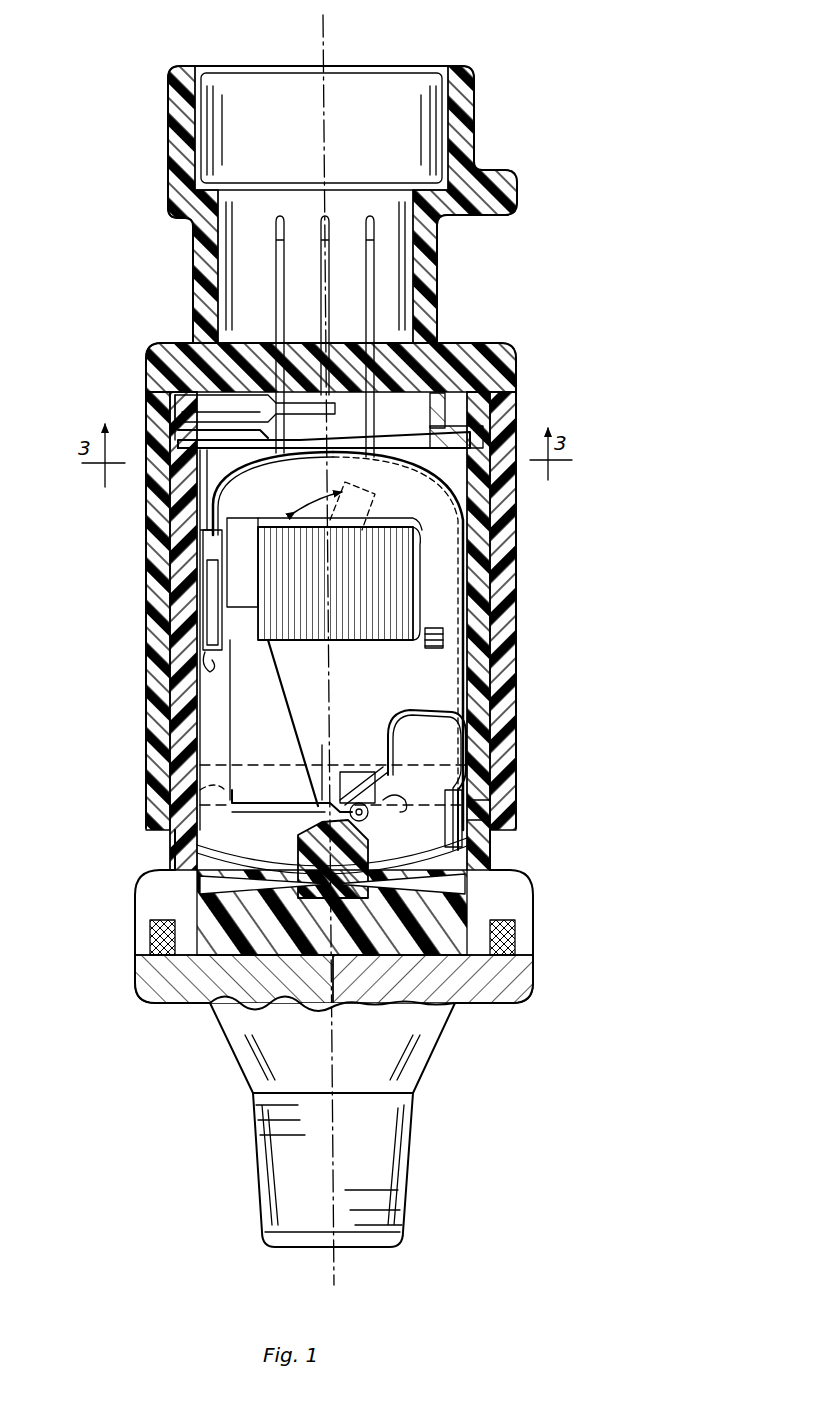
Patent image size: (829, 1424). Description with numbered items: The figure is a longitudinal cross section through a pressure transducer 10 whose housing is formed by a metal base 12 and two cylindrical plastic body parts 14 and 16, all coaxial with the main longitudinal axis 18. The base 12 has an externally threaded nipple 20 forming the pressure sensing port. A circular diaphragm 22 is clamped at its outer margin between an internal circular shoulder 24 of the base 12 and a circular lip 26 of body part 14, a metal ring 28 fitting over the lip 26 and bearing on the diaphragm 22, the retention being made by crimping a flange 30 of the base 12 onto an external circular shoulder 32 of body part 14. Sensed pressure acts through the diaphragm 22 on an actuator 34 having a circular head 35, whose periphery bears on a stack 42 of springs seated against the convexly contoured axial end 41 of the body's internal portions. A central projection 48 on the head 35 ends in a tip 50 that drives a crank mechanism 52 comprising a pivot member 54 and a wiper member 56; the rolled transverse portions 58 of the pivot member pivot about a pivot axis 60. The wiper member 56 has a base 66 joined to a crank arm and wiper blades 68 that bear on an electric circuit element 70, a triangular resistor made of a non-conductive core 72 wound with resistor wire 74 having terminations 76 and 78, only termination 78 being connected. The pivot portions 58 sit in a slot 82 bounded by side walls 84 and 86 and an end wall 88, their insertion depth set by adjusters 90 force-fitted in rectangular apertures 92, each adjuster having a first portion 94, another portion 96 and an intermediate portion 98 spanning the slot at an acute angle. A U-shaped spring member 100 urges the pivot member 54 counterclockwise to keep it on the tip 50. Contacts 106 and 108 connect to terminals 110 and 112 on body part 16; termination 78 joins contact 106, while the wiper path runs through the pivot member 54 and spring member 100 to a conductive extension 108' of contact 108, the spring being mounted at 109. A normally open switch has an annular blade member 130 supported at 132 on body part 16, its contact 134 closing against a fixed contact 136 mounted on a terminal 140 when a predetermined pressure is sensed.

The pressure transducer 10 is at (514, 343).
The metal base 12 is at (430, 1060).
The cylindrical plastic body part 14 is at (485, 733).
The cylindrical plastic body part 16 is at (508, 675).
The main longitudinal axis 18 is at (330, 50).
The externally threaded nipple 20 is at (410, 1175).
The diaphragm 22 is at (240, 1020).
The internal circular shoulder 24 is at (528, 925).
The circular lip 26 is at (150, 915).
The circular metal ring 28 is at (195, 942).
The flange 30 is at (522, 893).
The external circular shoulder 32 is at (165, 880).
The actuator 34 is at (215, 955).
The head 35 is at (300, 935).
The axial end 41 is at (240, 864).
The stack of springs 42 is at (480, 882).
The central projection 48 is at (150, 898).
The tip 50 is at (306, 830).
The crank mechanism 52 is at (322, 795).
The pivot member 54 is at (283, 800).
The wiper member 56 is at (262, 683).
The transverse portions 58 is at (390, 918).
The pivot axis 60 is at (480, 858).
The base 66 is at (248, 815).
The wiper blades 68 is at (328, 492).
The electric circuit element 70 is at (372, 530).
The non-conductive core 72 is at (450, 603).
The resistor wire 74 is at (418, 578).
The termination 76 is at (444, 638).
The termination 78 is at (212, 668).
The slot 82 is at (394, 770).
The side wall 84 is at (392, 865).
The side wall 86 is at (363, 763).
The end wall 88 is at (400, 736).
The adjusters 90 is at (200, 782).
The apertures 92 is at (195, 757).
The first portion 94 is at (200, 810).
The portion 96 is at (515, 768).
The intermediate portion 98 is at (413, 795).
The spring member 100 is at (422, 716).
The contact 106 is at (227, 487).
The contact 108 is at (464, 641).
The conductive extension 108' is at (552, 721).
The mounting point 109 is at (486, 812).
The terminal 110 is at (283, 270).
The terminal 112 is at (375, 270).
The annular blade member 130 is at (448, 352).
The support 132 is at (455, 428).
The contact 134 is at (207, 441).
The fixed contact 136 is at (180, 405).
The terminal 140 is at (326, 216).